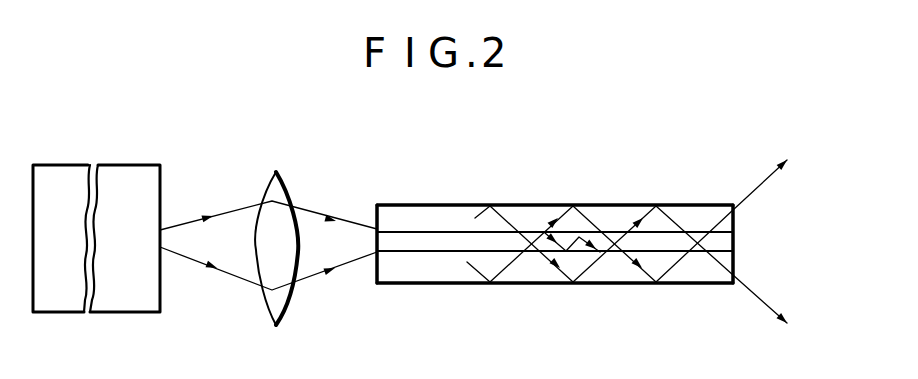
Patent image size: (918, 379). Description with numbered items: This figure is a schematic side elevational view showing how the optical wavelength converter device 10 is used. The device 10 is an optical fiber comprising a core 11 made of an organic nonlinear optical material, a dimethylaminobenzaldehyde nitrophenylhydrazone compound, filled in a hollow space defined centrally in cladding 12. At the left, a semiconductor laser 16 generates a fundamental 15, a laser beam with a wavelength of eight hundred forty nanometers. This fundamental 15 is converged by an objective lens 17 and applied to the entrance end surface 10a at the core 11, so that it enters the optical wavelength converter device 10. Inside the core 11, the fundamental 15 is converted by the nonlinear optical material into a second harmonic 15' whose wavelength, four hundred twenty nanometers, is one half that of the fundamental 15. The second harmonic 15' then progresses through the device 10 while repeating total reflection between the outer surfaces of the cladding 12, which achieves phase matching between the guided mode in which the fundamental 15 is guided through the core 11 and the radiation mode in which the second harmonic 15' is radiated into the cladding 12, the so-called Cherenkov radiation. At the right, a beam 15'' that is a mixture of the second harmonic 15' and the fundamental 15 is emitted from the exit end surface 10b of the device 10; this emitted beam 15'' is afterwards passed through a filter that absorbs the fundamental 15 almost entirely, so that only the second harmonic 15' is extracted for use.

The semiconductor laser 16 is at (147, 165).
The objective lens 17 is at (265, 190).
The fundamental 15 is at (380, 240).
The optical wavelength converter device 10 is at (612, 192).
The entrance end surface 10a is at (377, 232).
The exit end surface 10b is at (733, 237).
The core 11 is at (457, 245).
The cladding 12 is at (697, 215).
The second harmonic 15' is at (600, 218).
The emitted beam 15'' is at (760, 233).